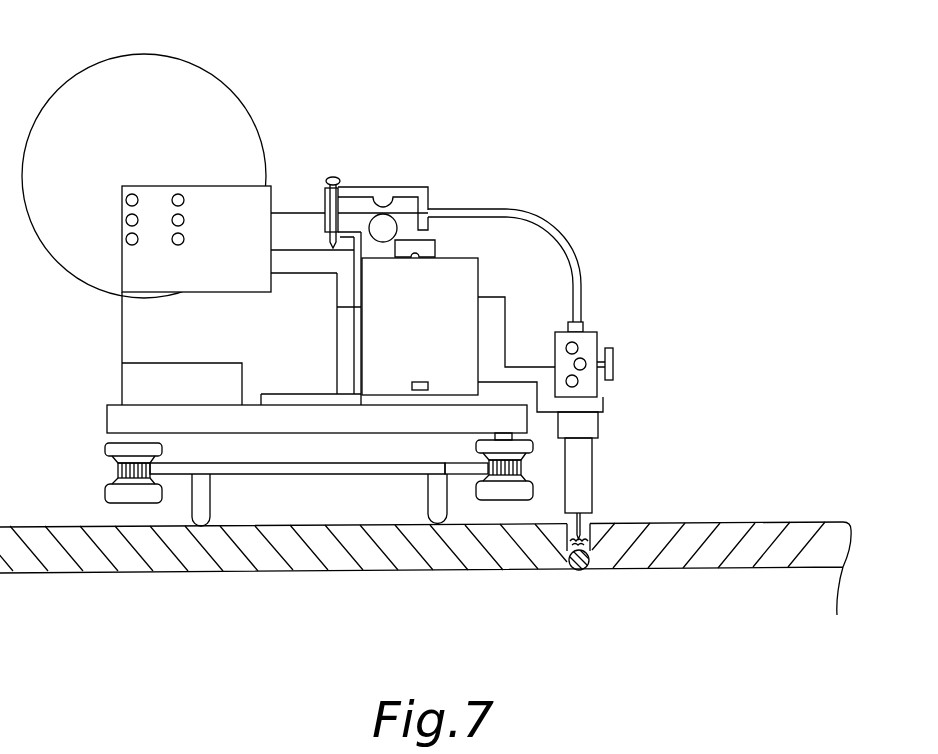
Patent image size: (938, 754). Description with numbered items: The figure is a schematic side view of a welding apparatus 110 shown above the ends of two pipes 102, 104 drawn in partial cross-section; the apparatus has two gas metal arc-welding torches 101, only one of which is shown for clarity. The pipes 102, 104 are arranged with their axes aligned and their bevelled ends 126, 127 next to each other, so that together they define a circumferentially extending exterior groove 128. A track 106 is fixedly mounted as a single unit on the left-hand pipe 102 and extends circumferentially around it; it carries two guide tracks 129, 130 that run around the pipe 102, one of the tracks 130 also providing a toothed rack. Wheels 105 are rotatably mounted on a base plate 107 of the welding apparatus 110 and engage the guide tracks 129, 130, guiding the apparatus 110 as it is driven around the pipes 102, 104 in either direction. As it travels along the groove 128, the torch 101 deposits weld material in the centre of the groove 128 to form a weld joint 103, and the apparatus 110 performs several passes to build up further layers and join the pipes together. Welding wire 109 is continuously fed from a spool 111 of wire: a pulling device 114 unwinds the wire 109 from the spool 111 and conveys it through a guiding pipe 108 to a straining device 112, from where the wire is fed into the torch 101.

The welding torch 101 is at (583, 522).
The pipe 102 is at (25, 557).
The weld joint 103 is at (582, 573).
The pipe 104 is at (765, 538).
The wheels 105 is at (128, 493).
The track 106 is at (208, 505).
The base plate 107 is at (303, 420).
The guiding pipe 108 is at (571, 248).
The welding wire 109 is at (290, 211).
The welding apparatus 110 is at (517, 206).
The spool 111 is at (146, 70).
The straining device 112 is at (588, 338).
The pulling device 114 is at (381, 197).
The pipe end 126 is at (538, 548).
The pipe end 127 is at (622, 540).
The groove 128 is at (592, 549).
The guide track 129 is at (175, 463).
The guide track 130 is at (467, 465).